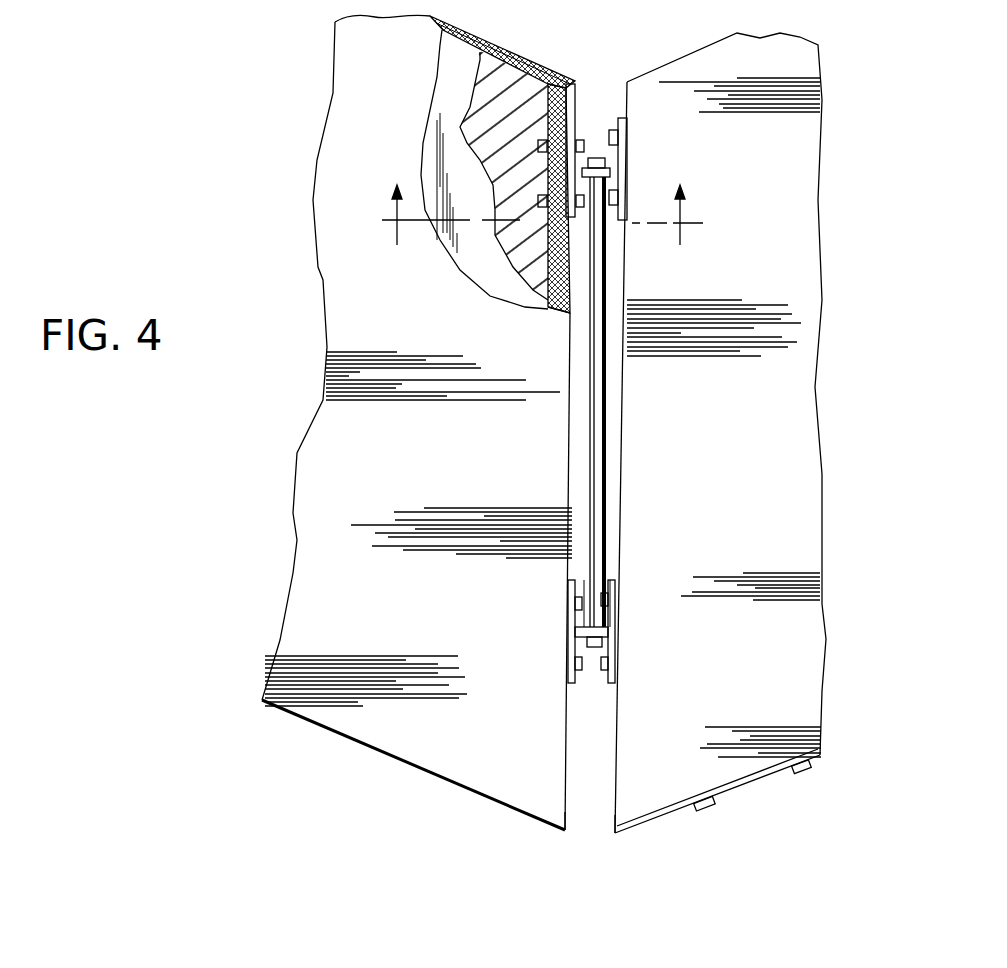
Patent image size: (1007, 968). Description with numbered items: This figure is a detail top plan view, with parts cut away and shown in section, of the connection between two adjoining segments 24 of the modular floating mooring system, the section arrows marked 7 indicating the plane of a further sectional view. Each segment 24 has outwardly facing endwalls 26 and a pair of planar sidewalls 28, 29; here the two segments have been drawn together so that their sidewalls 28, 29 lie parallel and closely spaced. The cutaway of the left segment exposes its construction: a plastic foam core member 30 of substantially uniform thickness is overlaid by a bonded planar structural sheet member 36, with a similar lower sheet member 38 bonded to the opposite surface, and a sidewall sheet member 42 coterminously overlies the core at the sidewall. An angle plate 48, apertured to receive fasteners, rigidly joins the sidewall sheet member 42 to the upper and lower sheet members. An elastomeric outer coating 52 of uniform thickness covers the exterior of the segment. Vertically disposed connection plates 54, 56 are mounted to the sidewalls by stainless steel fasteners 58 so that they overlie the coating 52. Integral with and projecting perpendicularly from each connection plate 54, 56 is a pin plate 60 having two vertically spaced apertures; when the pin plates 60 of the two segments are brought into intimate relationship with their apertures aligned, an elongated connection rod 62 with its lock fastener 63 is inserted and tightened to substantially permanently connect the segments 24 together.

The segment 24 is at (262, 583).
The endwall 26 is at (315, 732).
The sidewall 28 is at (602, 810).
The sidewall 29 is at (574, 808).
The plastic foam core member 30 is at (483, 168).
The planar structural sheet member 36 is at (443, 103).
The planar structural sheet member 38 is at (302, 6).
The planar structural sheet member 42 is at (578, 112).
The angle plate 48 is at (547, 267).
The elastomeric outer coating 52 is at (500, 47).
The connection plate 54 is at (603, 684).
The connection plate 56 is at (617, 112).
The fastener 58 is at (612, 595).
The pin plate 60 is at (626, 175).
The connection rod 62 is at (626, 194).
The lock fastener 63 is at (607, 640).
The section line 7- 7 is at (542, 234).